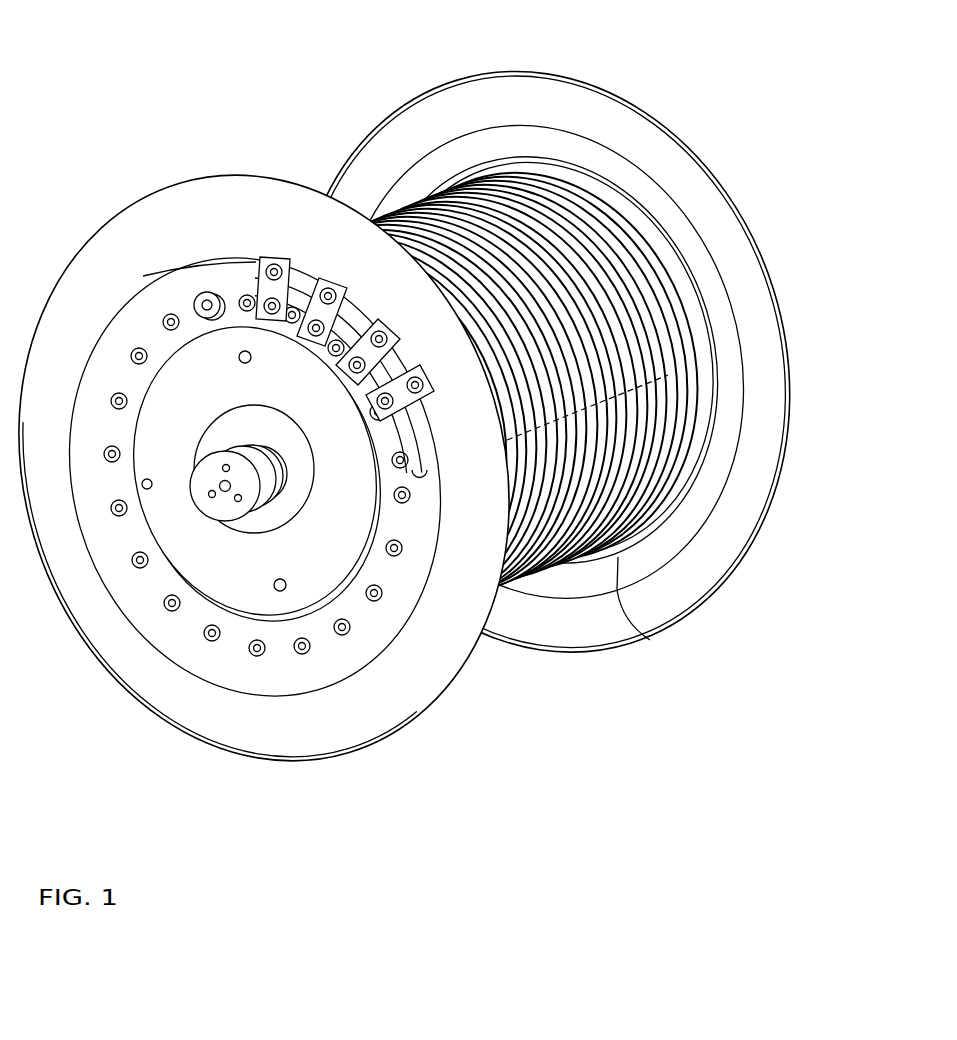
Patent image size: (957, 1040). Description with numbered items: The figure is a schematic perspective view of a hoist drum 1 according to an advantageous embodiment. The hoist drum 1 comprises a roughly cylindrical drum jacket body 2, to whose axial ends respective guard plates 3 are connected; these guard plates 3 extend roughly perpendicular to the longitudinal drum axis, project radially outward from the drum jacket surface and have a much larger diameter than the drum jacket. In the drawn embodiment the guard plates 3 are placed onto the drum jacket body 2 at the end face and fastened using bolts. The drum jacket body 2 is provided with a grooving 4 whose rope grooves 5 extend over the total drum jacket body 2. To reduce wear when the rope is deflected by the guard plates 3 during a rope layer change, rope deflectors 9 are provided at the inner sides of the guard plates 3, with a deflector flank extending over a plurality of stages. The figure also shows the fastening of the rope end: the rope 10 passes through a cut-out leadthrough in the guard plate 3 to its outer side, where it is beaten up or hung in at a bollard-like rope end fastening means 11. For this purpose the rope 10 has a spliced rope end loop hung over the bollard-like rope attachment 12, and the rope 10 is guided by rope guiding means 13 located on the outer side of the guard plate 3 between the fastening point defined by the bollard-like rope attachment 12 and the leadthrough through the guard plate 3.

The hoist drum 1 is at (657, 58).
The drum jacket body 2 is at (368, 183).
The guard plates 3 is at (690, 192).
The grooving 4 is at (520, 212).
The rope grooves 5 is at (548, 205).
The rope deflectors 9 is at (650, 640).
The rope 10 is at (258, 280).
The rope end fastening means 11 is at (176, 284).
The bollard-like rope attachment 12 is at (207, 293).
The rope guiding means 13 is at (280, 282).